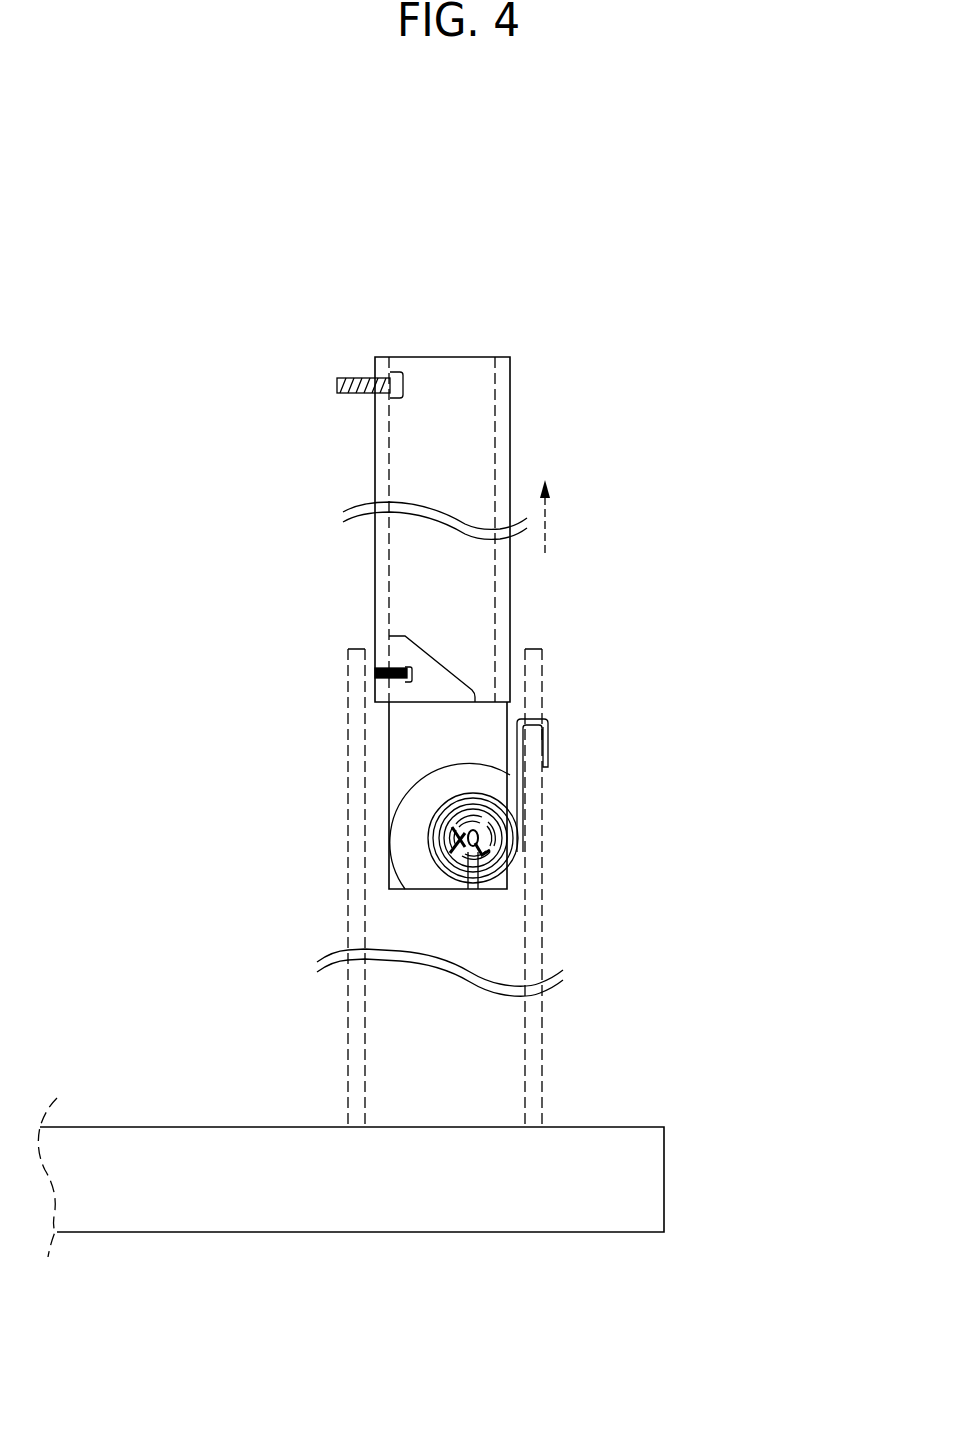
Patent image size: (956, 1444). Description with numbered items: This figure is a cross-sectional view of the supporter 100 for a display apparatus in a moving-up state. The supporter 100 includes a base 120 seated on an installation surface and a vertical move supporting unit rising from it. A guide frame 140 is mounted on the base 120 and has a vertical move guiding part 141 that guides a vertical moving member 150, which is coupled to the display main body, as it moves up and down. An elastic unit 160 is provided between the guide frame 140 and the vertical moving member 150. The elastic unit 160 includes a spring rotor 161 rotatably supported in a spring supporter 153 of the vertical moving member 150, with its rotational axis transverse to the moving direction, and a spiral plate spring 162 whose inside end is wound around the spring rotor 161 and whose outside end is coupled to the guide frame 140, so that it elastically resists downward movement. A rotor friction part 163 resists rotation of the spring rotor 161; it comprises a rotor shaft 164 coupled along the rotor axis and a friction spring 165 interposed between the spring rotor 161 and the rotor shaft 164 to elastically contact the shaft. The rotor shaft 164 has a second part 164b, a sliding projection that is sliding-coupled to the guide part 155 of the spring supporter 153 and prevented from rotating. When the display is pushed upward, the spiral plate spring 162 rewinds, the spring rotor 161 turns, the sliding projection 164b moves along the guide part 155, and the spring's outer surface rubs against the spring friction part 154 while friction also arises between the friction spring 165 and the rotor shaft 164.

The supporter 100 is at (722, 414).
The base 120 is at (327, 1232).
The guide frame 140 is at (535, 1019).
The vertical move guiding part 141 is at (481, 1073).
The vertical moving member 150 is at (510, 390).
The spring supporter 153 is at (247, 797).
The spring friction part 154 is at (438, 818).
The side surface guide part 155 is at (436, 868).
The elastic unit 160 is at (703, 740).
The spring rotor 161 is at (513, 805).
The spiral plate spring 162 is at (550, 742).
The rotor friction part 163 is at (643, 835).
The rotor shaft 164 is at (502, 835).
The second part 164b is at (520, 872).
The friction spring 165 is at (520, 863).